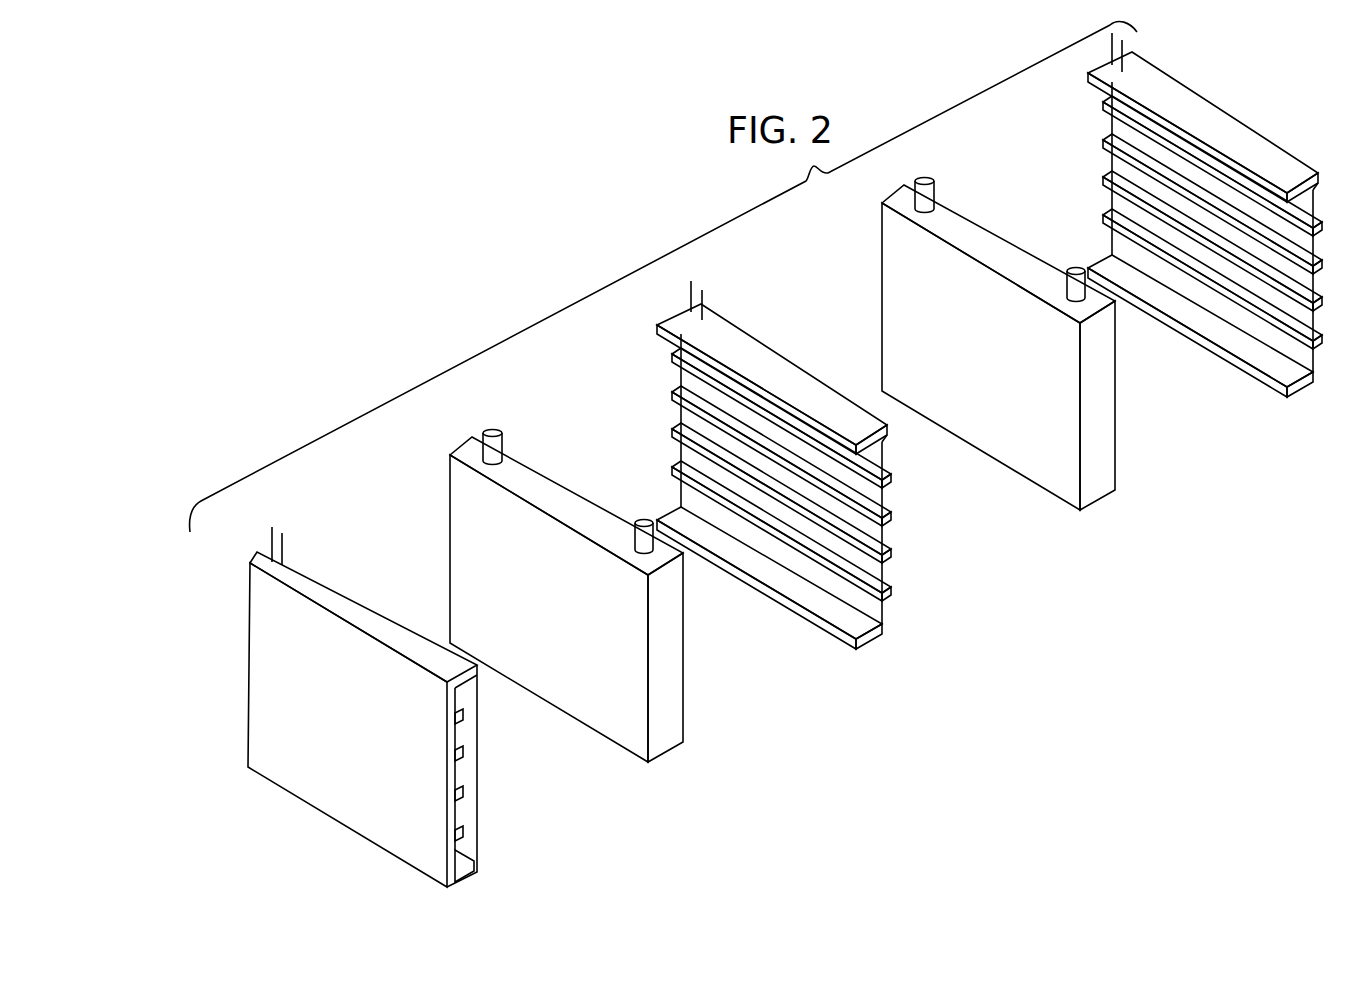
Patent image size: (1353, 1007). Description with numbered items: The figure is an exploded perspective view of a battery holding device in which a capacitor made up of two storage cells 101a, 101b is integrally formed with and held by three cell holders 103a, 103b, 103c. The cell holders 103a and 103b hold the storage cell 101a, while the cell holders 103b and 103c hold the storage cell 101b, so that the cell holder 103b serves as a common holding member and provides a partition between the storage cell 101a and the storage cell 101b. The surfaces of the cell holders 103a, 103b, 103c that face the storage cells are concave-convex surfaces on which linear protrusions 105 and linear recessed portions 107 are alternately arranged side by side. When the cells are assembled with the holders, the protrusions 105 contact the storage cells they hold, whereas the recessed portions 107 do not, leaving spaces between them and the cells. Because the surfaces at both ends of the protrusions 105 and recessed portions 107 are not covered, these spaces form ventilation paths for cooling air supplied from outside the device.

The storage cell 101a is at (663, 735).
The storage cell 101b is at (1093, 487).
The cell holder 103a is at (312, 772).
The cell holder 103b is at (677, 318).
The cell holder 103c is at (1203, 122).
The linear protrusion 105 is at (462, 758).
The linear recessed portion 107 is at (466, 778).